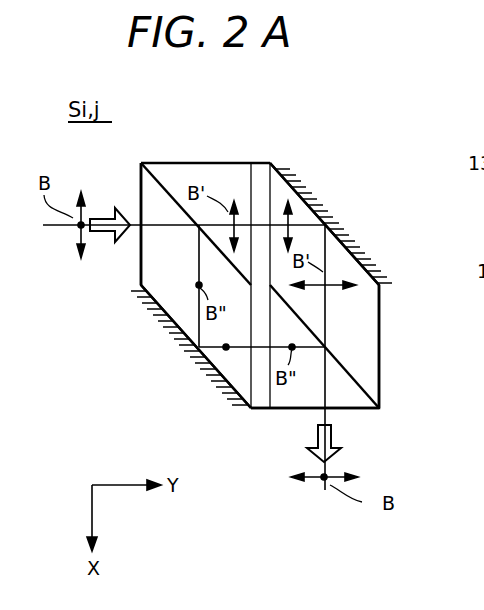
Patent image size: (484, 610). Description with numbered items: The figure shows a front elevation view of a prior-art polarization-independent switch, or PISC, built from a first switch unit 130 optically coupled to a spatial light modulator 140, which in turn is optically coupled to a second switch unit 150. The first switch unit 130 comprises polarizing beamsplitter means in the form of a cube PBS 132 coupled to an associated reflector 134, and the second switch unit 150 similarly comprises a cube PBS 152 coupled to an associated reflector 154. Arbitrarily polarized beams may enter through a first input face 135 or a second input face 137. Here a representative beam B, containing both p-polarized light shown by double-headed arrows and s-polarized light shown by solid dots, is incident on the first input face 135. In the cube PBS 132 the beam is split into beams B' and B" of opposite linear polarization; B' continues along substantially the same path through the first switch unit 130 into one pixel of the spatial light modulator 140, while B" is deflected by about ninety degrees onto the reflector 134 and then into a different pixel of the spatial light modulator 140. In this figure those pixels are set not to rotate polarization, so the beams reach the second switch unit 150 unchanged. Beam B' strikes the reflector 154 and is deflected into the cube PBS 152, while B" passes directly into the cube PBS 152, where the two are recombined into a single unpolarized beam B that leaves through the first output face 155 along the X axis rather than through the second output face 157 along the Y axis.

The first switch unit 130 is at (140, 257).
The cube PBS 132 is at (172, 163).
The reflector 134 is at (195, 370).
The first input face 135 is at (140, 190).
The second input face 137 is at (215, 163).
The spatial light modulator 140 is at (264, 163).
The second switch unit 150 is at (340, 252).
The cube PBS 152 is at (379, 345).
The reflector 154 is at (290, 183).
The first output face 155 is at (360, 409).
The second output face 157 is at (380, 396).